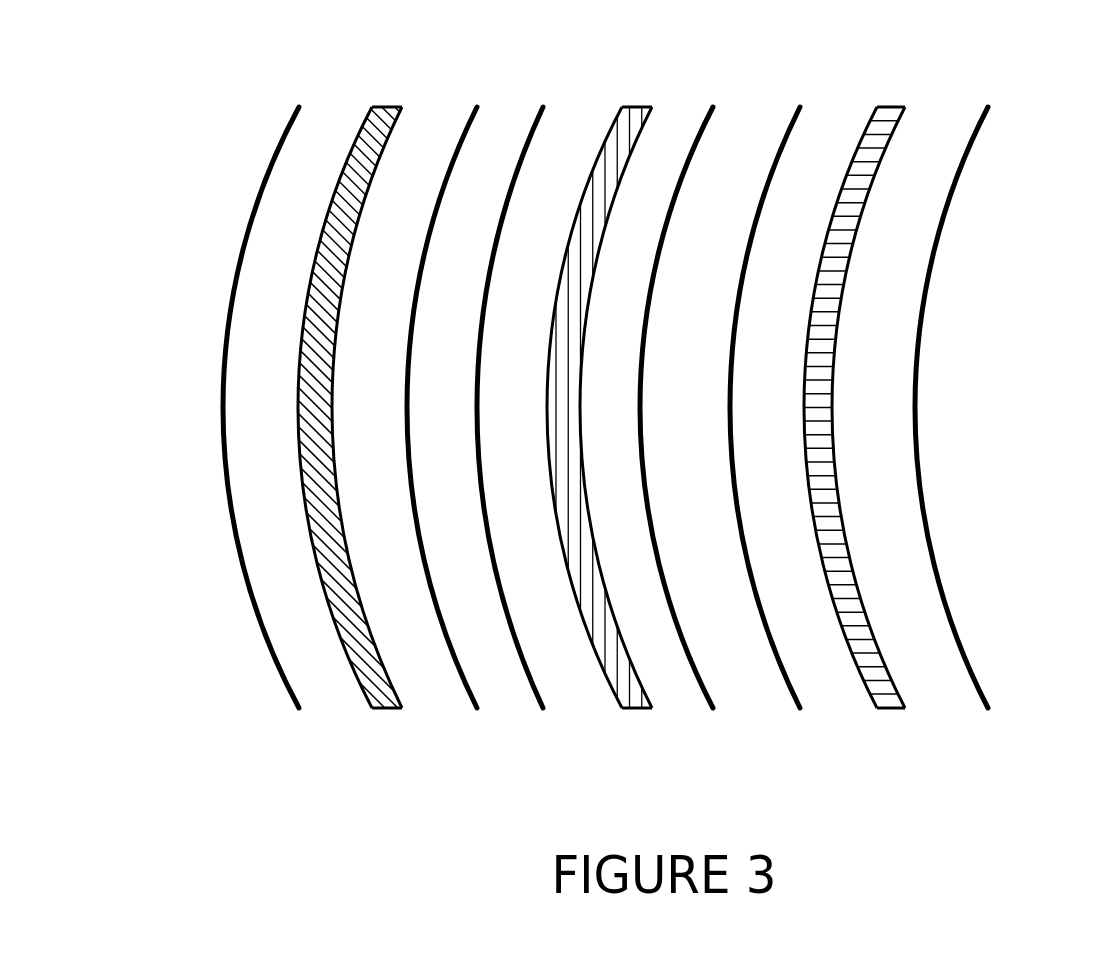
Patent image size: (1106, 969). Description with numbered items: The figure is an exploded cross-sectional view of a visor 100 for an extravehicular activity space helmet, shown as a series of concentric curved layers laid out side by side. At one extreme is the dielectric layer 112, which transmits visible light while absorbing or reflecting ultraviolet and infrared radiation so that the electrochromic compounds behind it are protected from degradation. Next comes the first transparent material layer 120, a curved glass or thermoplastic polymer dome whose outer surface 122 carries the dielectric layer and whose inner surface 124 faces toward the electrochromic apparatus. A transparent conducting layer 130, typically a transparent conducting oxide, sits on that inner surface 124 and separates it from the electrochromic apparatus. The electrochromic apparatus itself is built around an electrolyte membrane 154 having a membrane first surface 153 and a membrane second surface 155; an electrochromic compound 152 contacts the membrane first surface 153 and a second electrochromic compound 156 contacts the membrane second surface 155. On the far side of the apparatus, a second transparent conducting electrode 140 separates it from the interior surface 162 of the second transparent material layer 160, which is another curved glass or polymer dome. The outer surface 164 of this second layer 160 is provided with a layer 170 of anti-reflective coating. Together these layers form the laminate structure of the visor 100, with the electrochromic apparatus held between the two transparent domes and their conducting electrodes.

The visor 100 is at (81, 127).
The dielectric layer 112 is at (285, 125).
The first transparent material layer 120 is at (360, 125).
The outer surface 122 is at (361, 689).
The inner surface 124 is at (396, 683).
The transparent conducting layer 130 is at (463, 125).
The transparent conducting electrode 140 is at (790, 124).
The electrochromic compound 152 is at (530, 124).
The membrane first surface 153 is at (611, 688).
The electrolyte membrane 154 is at (610, 124).
The membrane second surface 155 is at (646, 687).
The electrochromic compound 156 is at (700, 124).
The second transparent material layer 160 is at (865, 125).
The interior surface 162 is at (866, 689).
The outer surface 164 is at (893, 683).
The anti-reflective coating layer 170 is at (975, 125).